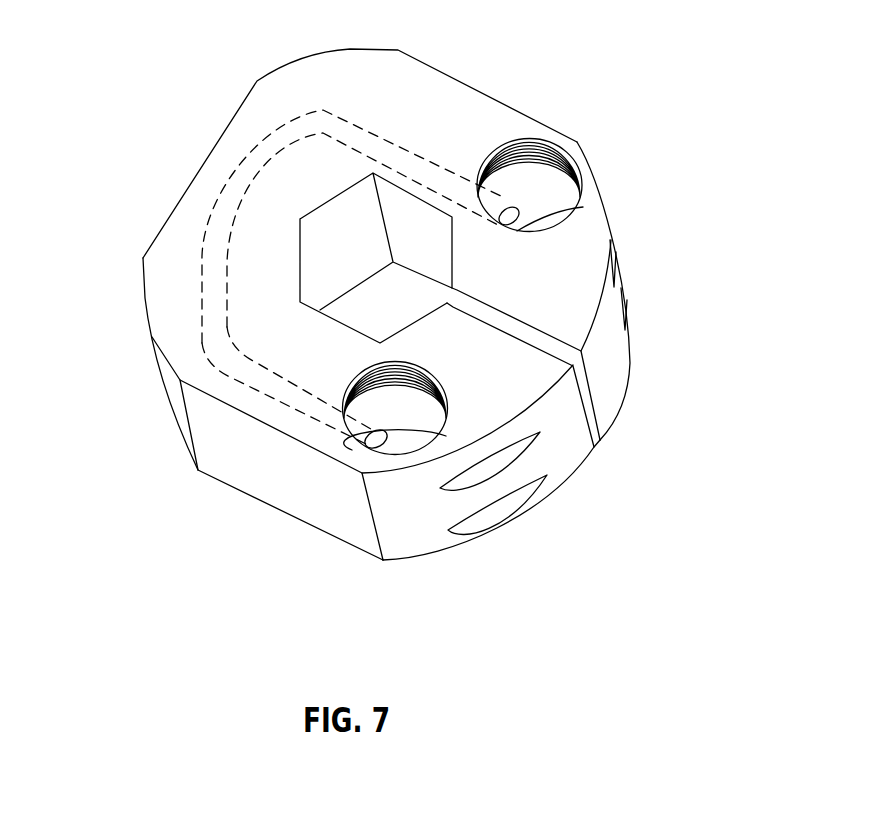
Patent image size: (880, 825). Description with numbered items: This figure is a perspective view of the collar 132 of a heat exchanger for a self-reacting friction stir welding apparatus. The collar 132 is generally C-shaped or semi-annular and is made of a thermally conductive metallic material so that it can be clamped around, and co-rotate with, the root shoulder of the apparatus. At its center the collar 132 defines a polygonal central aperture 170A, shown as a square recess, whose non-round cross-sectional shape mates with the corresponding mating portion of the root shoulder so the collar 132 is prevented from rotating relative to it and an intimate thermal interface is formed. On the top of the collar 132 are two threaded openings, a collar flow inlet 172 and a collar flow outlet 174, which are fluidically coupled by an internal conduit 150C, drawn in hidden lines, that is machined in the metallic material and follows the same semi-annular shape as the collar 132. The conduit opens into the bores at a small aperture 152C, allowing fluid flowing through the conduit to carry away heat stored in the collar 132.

The collar 132 is at (511, 112).
The internal conduit 150C is at (200, 290).
The cable aperture 152C is at (384, 443).
The central aperture 170A is at (371, 213).
The collar flow inlet 172 is at (535, 189).
The collar flow outlet 174 is at (403, 410).